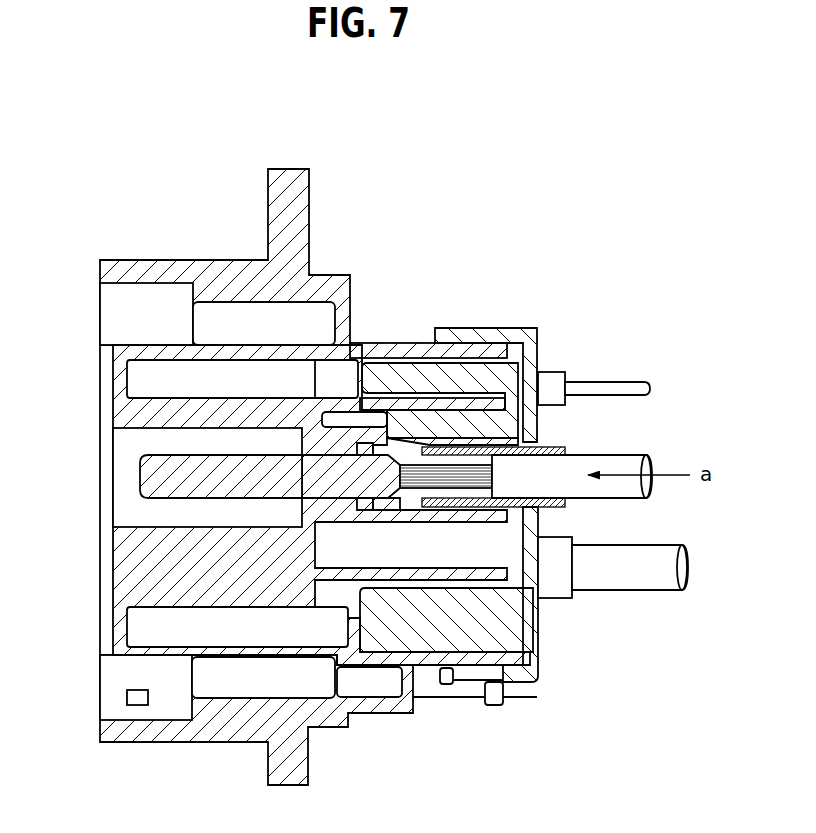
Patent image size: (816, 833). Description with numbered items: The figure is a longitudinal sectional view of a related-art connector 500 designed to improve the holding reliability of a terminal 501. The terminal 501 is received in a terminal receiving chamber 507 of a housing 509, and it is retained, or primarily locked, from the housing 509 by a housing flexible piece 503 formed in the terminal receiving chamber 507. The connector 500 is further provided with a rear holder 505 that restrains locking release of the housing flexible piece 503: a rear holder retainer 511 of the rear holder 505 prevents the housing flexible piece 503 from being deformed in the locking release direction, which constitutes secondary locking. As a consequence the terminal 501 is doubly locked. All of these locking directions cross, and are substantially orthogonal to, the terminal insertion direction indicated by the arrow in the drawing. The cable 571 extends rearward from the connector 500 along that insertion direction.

The connector 500 is at (150, 150).
The terminal 501 is at (216, 454).
The housing flexible piece 503 is at (406, 446).
The rear holder 505 is at (503, 384).
The terminal receiving chamber 507 is at (393, 507).
The housing 509 is at (381, 343).
The rear holder retainer 511 is at (456, 406).
The cable 571 is at (622, 460).